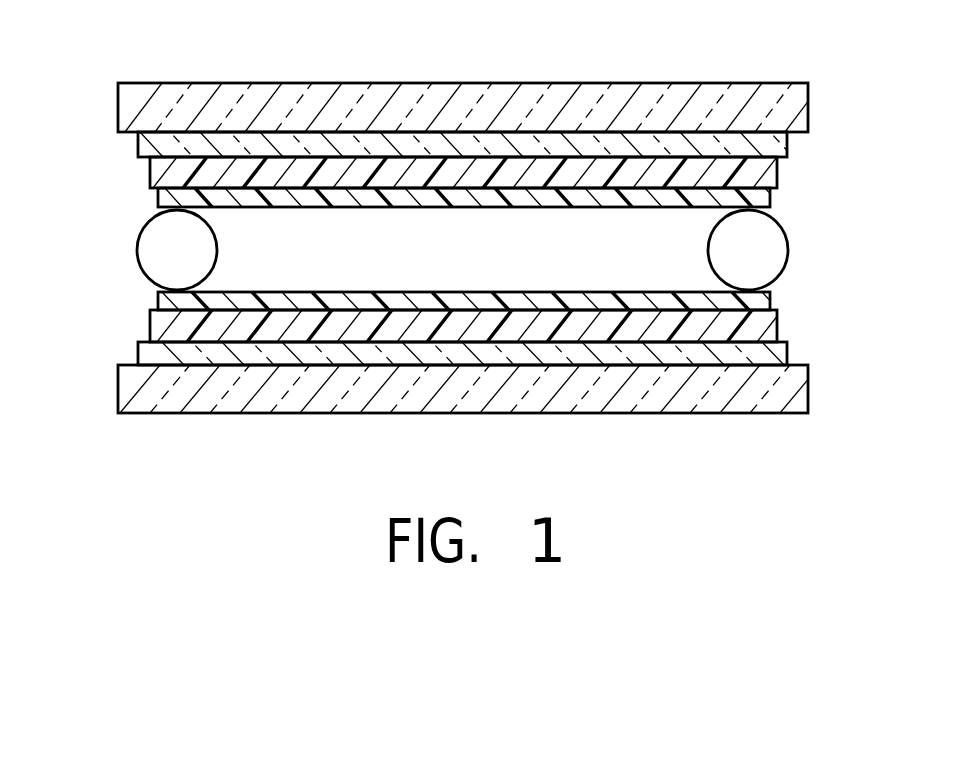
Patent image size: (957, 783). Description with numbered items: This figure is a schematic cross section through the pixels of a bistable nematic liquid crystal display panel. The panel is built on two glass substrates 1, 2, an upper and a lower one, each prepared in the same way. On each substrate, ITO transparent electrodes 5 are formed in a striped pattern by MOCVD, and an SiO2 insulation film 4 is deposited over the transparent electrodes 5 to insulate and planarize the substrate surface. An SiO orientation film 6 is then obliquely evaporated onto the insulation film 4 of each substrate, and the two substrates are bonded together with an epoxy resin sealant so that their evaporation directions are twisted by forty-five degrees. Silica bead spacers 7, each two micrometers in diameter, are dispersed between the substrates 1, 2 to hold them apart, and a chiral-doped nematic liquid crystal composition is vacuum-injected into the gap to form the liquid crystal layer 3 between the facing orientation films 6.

The glass substrate 1 is at (767, 88).
The glass substrate 2 is at (803, 398).
The liquid crystal layer 3 is at (432, 220).
The insulation film 4 is at (776, 173).
The transparent electrode 5 is at (772, 147).
The orientation film 6 is at (158, 198).
The spacer 7 is at (202, 268).